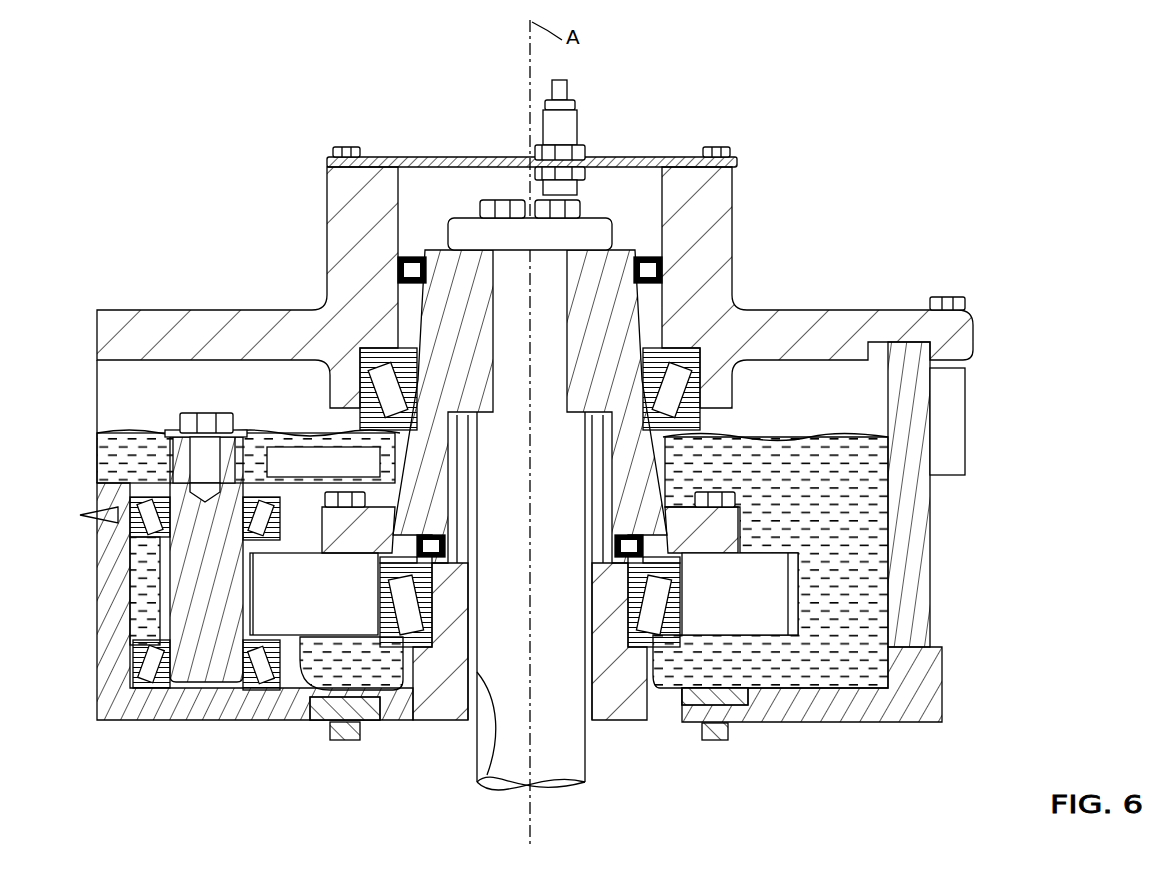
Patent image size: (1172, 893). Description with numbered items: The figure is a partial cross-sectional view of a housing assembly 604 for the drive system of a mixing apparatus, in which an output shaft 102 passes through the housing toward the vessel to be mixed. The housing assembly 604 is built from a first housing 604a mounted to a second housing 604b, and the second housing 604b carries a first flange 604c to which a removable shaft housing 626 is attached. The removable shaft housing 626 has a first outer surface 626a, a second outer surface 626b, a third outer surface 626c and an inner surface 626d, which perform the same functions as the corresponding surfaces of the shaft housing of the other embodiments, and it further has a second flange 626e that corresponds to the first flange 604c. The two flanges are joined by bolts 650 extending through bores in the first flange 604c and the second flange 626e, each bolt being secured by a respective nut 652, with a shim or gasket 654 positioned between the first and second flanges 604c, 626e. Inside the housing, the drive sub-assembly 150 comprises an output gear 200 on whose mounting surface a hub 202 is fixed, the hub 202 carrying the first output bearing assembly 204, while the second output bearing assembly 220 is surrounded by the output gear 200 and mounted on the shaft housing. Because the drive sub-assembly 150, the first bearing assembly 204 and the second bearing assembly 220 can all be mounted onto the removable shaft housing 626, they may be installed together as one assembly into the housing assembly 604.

The output shaft 102 is at (585, 776).
The drive sub-assembly 150 is at (790, 528).
The output gear 200 is at (295, 645).
The hub 202 is at (672, 462).
The first output bearing assembly 204 is at (712, 362).
The second output bearing assembly 220 is at (383, 643).
The housing assembly 604 is at (604, 434).
The first housing 604a is at (975, 325).
The second housing 604b is at (932, 500).
The first flange 604c is at (743, 693).
The removable shaft housing 626 is at (574, 460).
The first outer surface 626a is at (452, 460).
The second outer surface 626b is at (447, 548).
The third outer surface 626c is at (408, 533).
The inner surface 626d is at (488, 773).
The second flange 626e is at (690, 722).
The bolts 650 is at (730, 685).
The nuts 652 is at (728, 740).
The shim or gasket 654 is at (725, 708).